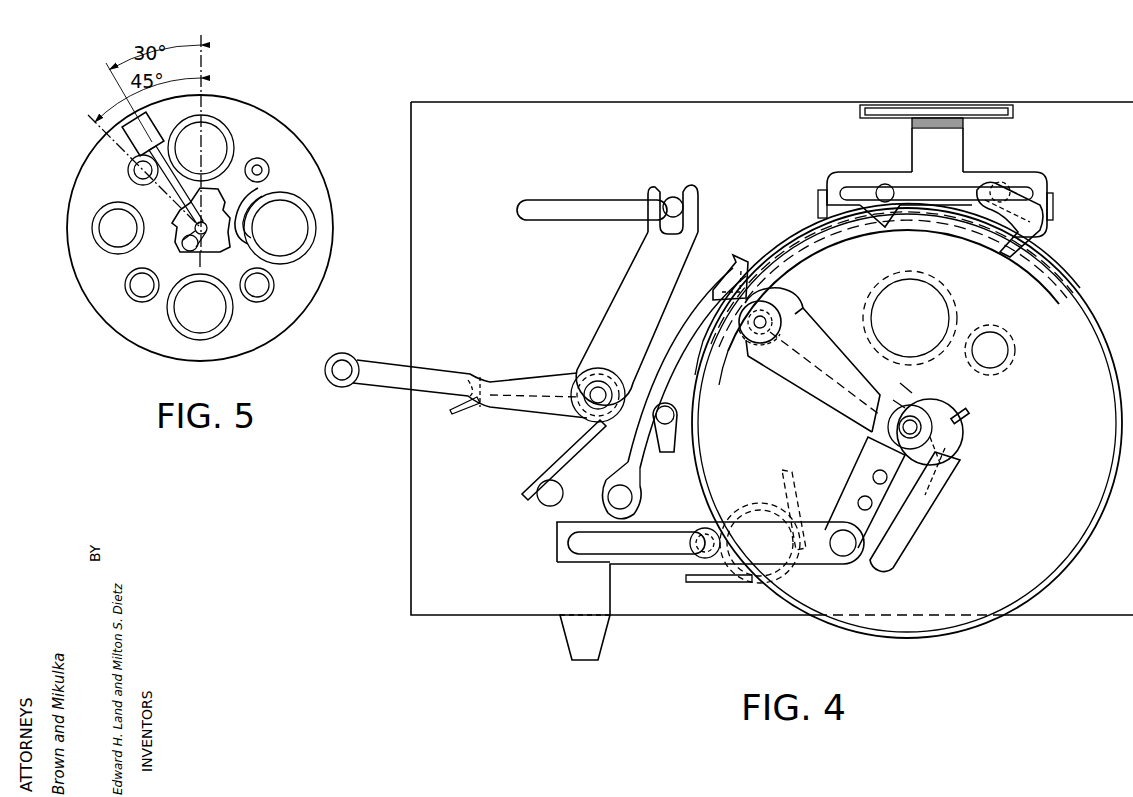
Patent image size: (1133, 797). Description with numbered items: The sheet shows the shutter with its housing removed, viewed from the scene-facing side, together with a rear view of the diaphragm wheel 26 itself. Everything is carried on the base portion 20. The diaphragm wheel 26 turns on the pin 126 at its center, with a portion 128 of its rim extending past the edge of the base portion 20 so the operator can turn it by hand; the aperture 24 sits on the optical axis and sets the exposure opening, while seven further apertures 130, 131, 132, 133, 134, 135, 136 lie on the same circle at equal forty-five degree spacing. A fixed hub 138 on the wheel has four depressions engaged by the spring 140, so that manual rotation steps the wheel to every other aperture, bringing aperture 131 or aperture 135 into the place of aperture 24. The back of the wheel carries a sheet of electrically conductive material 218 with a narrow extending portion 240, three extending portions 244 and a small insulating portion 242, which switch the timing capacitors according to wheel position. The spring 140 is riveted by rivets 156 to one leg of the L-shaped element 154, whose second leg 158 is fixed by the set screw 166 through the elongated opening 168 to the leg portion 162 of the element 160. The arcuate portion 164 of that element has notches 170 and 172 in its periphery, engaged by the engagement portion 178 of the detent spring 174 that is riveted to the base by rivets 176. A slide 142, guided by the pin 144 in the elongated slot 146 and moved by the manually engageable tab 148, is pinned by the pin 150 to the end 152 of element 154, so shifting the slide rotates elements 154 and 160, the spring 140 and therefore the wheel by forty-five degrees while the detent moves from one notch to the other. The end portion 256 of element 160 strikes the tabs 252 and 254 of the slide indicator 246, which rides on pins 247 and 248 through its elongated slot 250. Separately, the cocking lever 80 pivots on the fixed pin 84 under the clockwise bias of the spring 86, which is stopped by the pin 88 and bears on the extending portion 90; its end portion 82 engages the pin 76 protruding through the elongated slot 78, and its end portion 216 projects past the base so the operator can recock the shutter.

In FIG. 4, the base portion 20 is at (412, 508).
In FIG. 5, the aperture 24 is at (229, 134).
In FIG. 4, the aperture 24 is at (943, 297).
In FIG. 5, the diaphragm wheel 26 is at (284, 130).
In FIG. 4, the diaphragm wheel 26 is at (1058, 303).
In FIG. 4, the fixed pin 76 is at (677, 203).
In FIG. 4, the elongated slot 78 is at (580, 200).
In FIG. 4, the cocking lever 80 is at (612, 335).
In FIG. 4, the end portion 82 is at (698, 213).
In FIG. 4, the fixed pin 84 is at (590, 397).
In FIG. 4, the spring 86 is at (554, 478).
In FIG. 4, the pin 88 is at (548, 505).
In FIG. 4, the extending portion 90 is at (482, 375).
In FIG. 4, the pin 126 is at (912, 414).
In FIG. 4, the portion of diaphragm wheel 128 is at (953, 632).
In FIG. 5, the aperture 130 is at (264, 170).
In FIG. 4, the aperture 130 is at (1009, 352).
In FIG. 5, the aperture 131 is at (311, 212).
In FIG. 5, the aperture 132 is at (274, 284).
In FIG. 5, the aperture 133 is at (225, 328).
In FIG. 5, the aperture 134 is at (140, 302).
In FIG. 5, the aperture 135 is at (129, 249).
In FIG. 5, the aperture 136 is at (128, 170).
In FIG. 4, the fixed hub 138 is at (953, 413).
In FIG. 4, the spring 140 is at (928, 484).
In FIG. 4, the slide 142 is at (620, 555).
In FIG. 4, the pin 144 is at (692, 552).
In FIG. 4, the elongated slot 146 is at (661, 522).
In FIG. 4, the manually engageable tab 148 is at (590, 643).
In FIG. 4, the pin 150 is at (831, 563).
In FIG. 4, the end 152 is at (797, 522).
In FIG. 4, the L-shaped element 154 is at (950, 443).
In FIG. 4, the rivets 156 is at (871, 483).
In FIG. 4, the second leg 158 is at (782, 380).
In FIG. 4, the element 160 is at (787, 283).
In FIG. 4, the leg portion 162 is at (823, 356).
In FIG. 4, the arcuate portion 164 is at (847, 237).
In FIG. 4, the set screw 166 is at (776, 332).
In FIG. 4, the elongated opening 168 is at (748, 342).
In FIG. 4, the notch 170 is at (760, 263).
In FIG. 4, the notch 172 is at (897, 213).
In FIG. 4, the detent spring 174 is at (684, 352).
In FIG. 4, the rivets 176 is at (648, 452).
In FIG. 4, the engagement portion 178 is at (737, 277).
In FIG. 4, the end portion 216 is at (343, 380).
In FIG. 5, the electrically conductive material 218 is at (178, 212).
In FIG. 5, the extending portion 240 is at (133, 150).
In FIG. 5, the insulating portion 242 is at (206, 230).
In FIG. 5, the extending portions 244 is at (258, 189).
In FIG. 4, the slide indicator 246 is at (957, 149).
In FIG. 4, the pin 247 is at (885, 184).
In FIG. 4, the pin 248 is at (1007, 185).
In FIG. 4, the elongated slot 250 is at (850, 172).
In FIG. 4, the tab 252 is at (818, 210).
In FIG. 4, the tab 254 is at (1055, 217).
In FIG. 4, the end portion 256 is at (1037, 235).